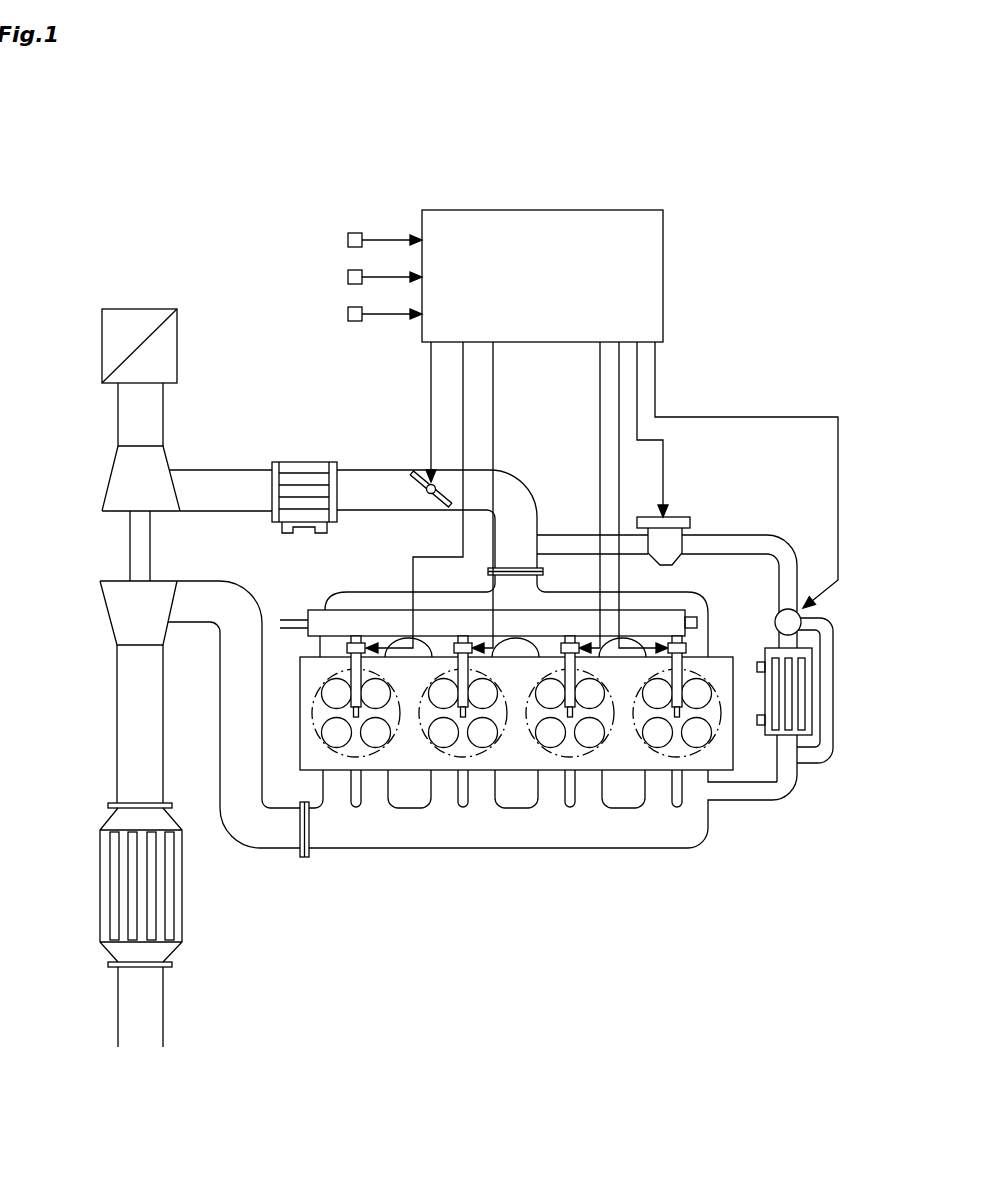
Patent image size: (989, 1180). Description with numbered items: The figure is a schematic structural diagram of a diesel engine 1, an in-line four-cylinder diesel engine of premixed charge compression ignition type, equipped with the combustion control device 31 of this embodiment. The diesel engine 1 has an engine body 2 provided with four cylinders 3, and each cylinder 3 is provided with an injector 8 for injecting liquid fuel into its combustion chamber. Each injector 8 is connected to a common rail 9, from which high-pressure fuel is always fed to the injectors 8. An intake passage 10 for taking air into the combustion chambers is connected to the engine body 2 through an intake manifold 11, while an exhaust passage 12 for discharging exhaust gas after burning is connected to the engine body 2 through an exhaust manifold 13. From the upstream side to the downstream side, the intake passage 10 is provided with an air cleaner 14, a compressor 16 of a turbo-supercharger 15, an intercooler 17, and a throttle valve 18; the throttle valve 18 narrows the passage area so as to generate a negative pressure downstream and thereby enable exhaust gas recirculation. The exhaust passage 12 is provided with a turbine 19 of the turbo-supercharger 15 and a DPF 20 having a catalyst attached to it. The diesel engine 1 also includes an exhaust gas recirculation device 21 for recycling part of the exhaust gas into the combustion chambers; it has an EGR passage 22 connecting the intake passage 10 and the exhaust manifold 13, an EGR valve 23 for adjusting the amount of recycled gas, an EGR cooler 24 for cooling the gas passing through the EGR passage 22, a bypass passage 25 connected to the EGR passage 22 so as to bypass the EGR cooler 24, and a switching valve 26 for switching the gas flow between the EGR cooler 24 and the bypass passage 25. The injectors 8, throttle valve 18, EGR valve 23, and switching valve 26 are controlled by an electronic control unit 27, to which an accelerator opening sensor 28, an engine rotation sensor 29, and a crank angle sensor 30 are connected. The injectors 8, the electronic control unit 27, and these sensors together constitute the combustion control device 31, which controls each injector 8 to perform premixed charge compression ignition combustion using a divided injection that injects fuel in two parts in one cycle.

The diesel engine 1 is at (186, 189).
The engine body 2 is at (735, 752).
The cylinder 3 is at (375, 752).
The injector 8 is at (352, 665).
The common rail 9 is at (348, 614).
The intake passage 10 is at (370, 478).
The intake manifold 11 is at (665, 597).
The exhaust passage 12 is at (248, 823).
The exhaust manifold 13 is at (518, 838).
The air cleaner 14 is at (104, 349).
The turbo-supercharger 15 is at (146, 545).
The compressor 16 is at (118, 493).
The intercooler 17 is at (305, 463).
The throttle valve 18 is at (425, 490).
The turbine 19 is at (120, 613).
The DPF 20 is at (108, 888).
The exhaust gas recirculation device 21 is at (694, 651).
The EGR passage 22 is at (722, 543).
The EGR valve 23 is at (672, 521).
The EGR cooler 24 is at (786, 735).
The bypass passage 25 is at (830, 700).
The switching valve 26 is at (790, 609).
The electronic control unit 27 is at (543, 218).
The accelerator opening sensor 28 is at (348, 239).
The engine rotation sensor 29 is at (348, 277).
The crank angle sensor 30 is at (348, 312).
The combustion control device 31 is at (652, 198).